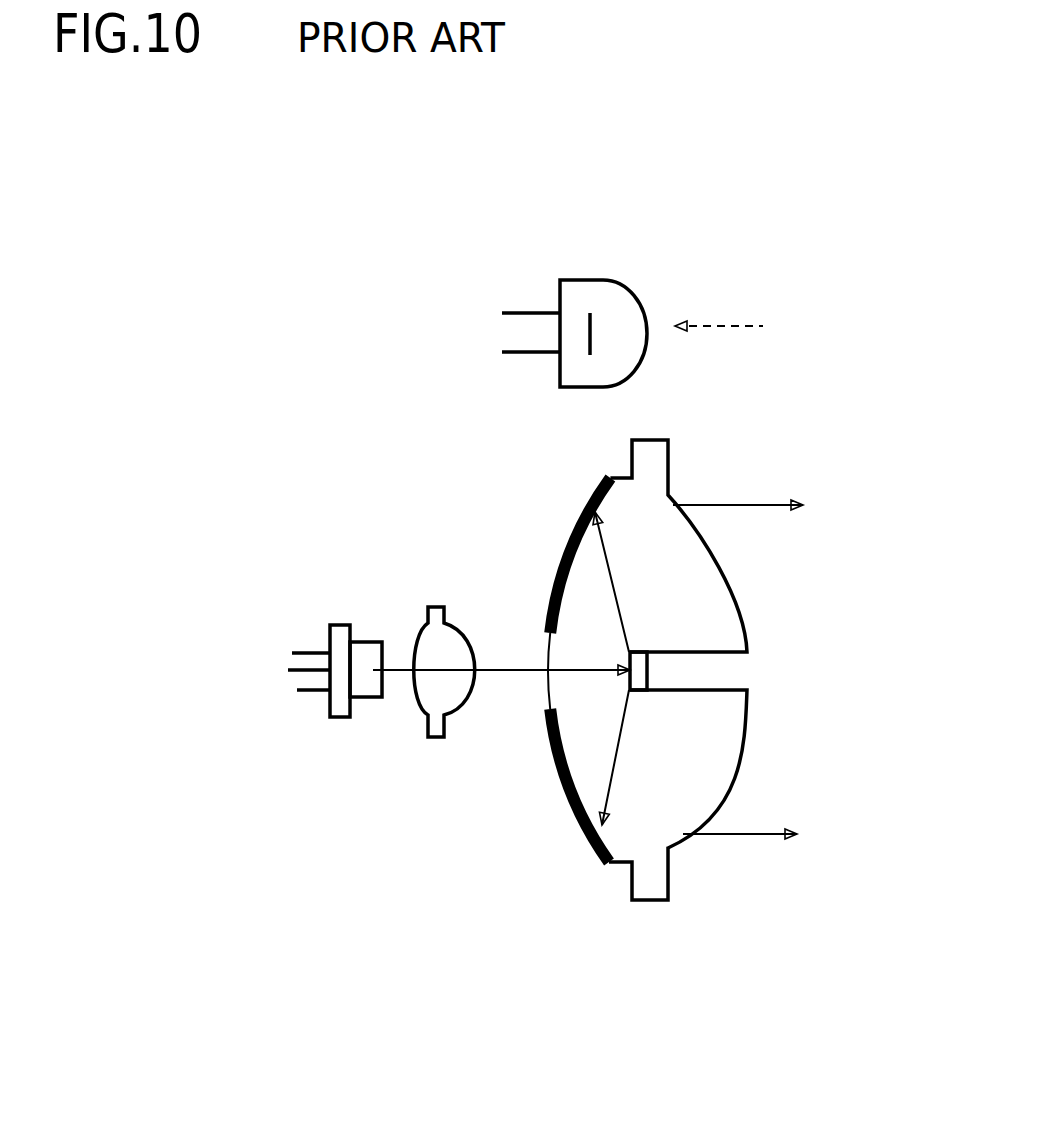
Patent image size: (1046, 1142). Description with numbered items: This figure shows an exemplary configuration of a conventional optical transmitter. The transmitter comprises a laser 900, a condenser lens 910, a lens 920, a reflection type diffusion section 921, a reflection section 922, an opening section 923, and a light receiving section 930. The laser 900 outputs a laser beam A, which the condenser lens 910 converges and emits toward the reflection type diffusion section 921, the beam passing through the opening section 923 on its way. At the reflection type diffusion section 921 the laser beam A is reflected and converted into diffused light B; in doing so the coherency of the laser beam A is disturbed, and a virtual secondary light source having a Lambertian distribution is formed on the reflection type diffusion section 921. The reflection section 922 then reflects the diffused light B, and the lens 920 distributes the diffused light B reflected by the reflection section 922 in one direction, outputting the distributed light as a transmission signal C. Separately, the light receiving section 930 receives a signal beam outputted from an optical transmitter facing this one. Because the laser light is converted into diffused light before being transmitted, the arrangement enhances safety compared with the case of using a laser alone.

The laser 900 is at (340, 705).
The condenser lens 910 is at (430, 633).
The lens 920 is at (667, 797).
The reflection type diffusion section 921 is at (642, 652).
The reflection section 922 is at (570, 830).
The opening section 923 is at (543, 673).
The light receiving section 930 is at (580, 298).
The laser beam A is at (493, 667).
The diffused light B is at (612, 805).
The transmission signal C is at (733, 498).